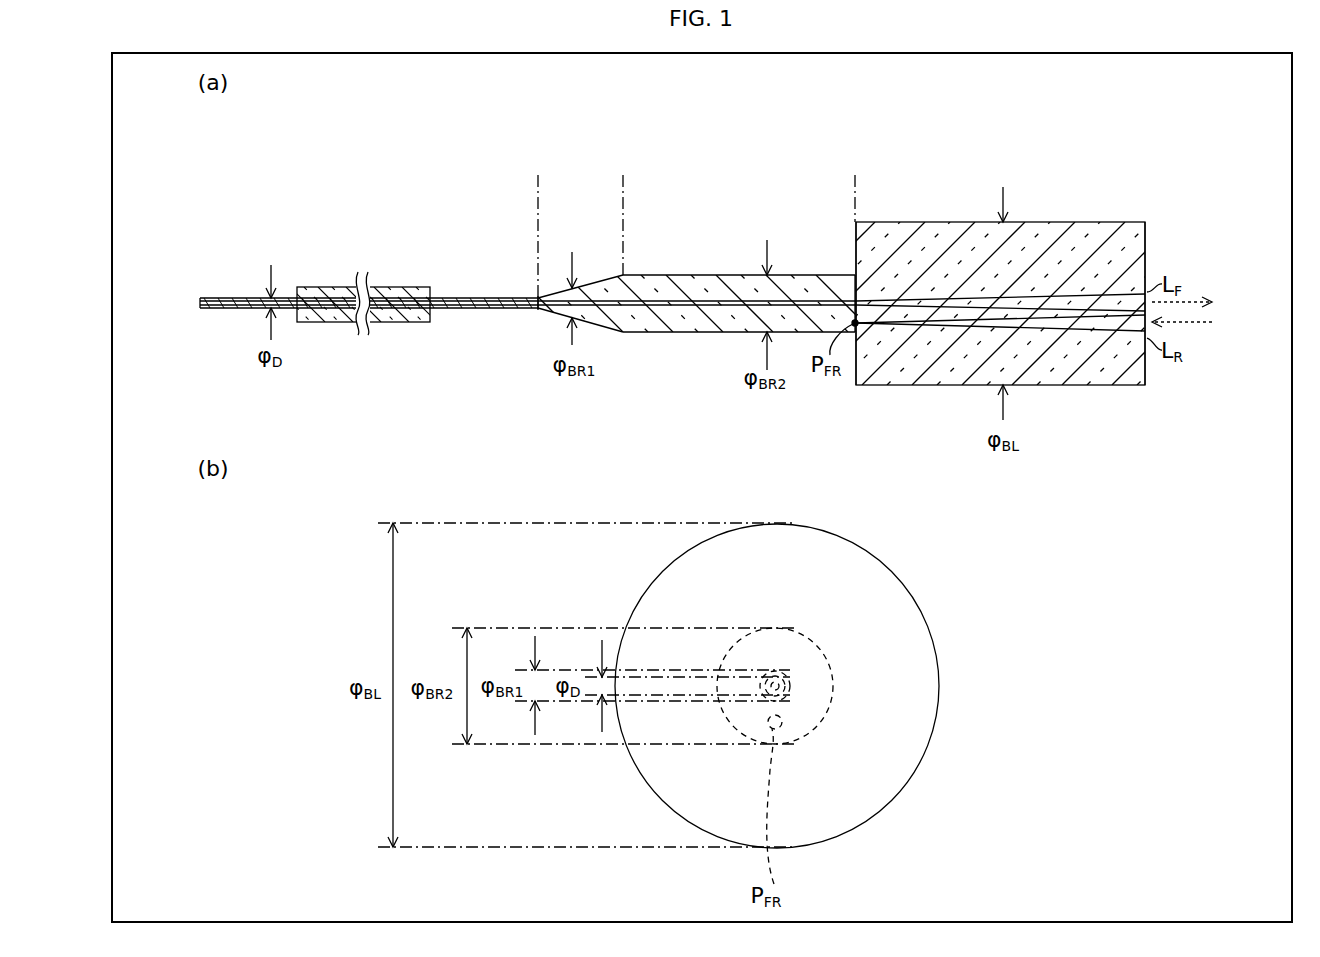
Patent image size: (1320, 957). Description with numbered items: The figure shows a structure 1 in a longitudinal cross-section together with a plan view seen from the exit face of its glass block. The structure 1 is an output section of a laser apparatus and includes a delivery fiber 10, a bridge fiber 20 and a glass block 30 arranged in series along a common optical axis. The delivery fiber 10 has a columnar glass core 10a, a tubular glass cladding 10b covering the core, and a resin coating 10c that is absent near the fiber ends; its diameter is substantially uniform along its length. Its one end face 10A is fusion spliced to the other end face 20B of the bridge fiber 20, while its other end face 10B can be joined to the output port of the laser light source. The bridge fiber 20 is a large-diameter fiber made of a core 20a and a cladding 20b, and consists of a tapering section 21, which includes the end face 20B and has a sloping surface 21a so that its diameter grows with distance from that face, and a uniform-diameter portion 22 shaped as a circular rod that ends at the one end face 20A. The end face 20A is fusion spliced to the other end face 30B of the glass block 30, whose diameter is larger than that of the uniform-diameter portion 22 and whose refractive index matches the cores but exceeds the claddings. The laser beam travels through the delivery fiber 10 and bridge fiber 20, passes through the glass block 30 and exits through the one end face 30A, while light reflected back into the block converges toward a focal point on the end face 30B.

The structure 1 is at (1004, 124).
The delivery fiber 10 is at (376, 219).
The core 10a is at (463, 298).
The cladding 10b is at (488, 310).
The coating 10c is at (405, 287).
The one end face of the delivery fiber 10A is at (540, 312).
The other end face of the delivery fiber 10B is at (200, 310).
The bridge fiber 20 is at (563, 125).
The core 20a is at (628, 300).
The cladding 20b is at (690, 333).
The one end face of the bridge fiber 20A is at (855, 278).
The other end face of the bridge fiber 20B is at (534, 298).
The tapering section 21 is at (623, 187).
The sloping surface 21a is at (592, 285).
The uniform-diameter portion 22 is at (623, 187).
The glass block 30 is at (1057, 222).
The one end face of the glass block 30A is at (1145, 386).
The other end face of the glass block 30B is at (856, 386).